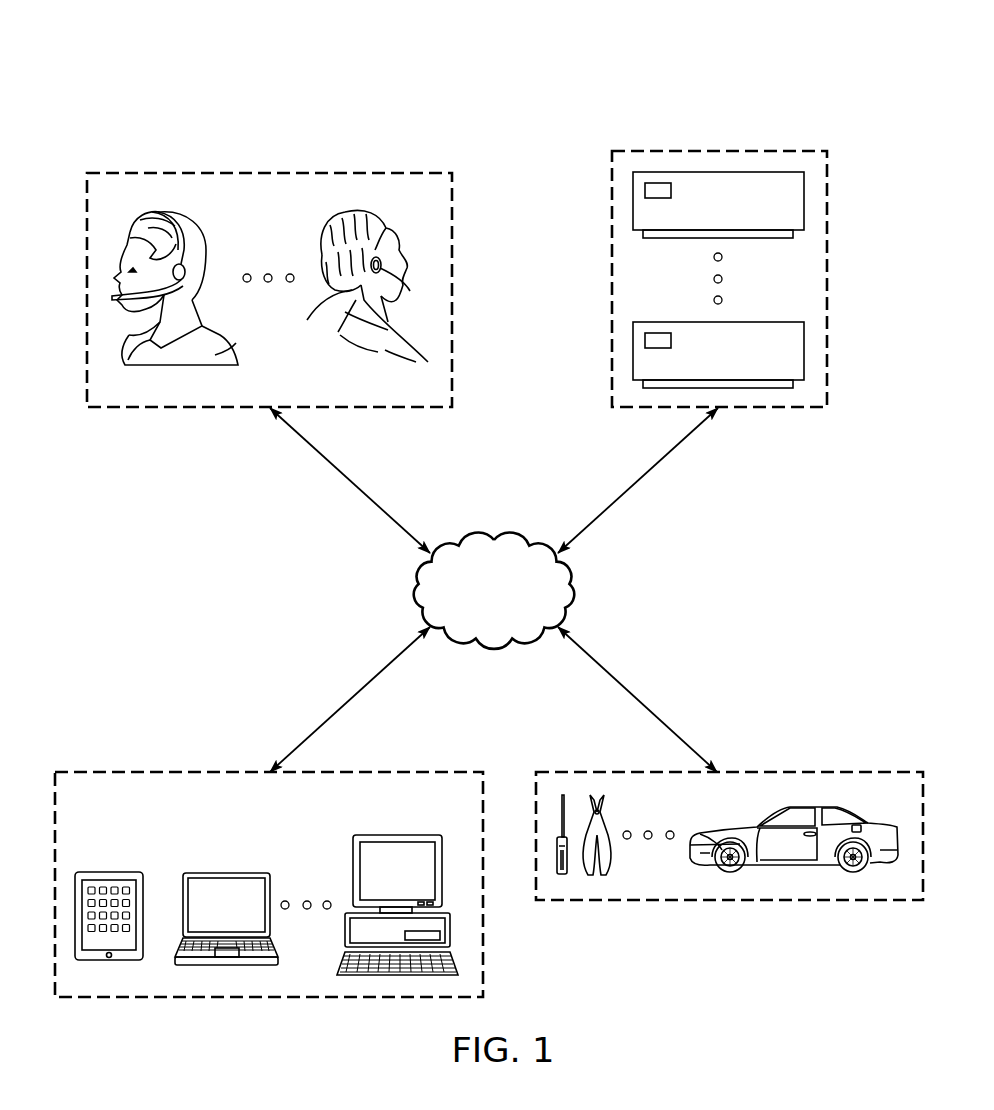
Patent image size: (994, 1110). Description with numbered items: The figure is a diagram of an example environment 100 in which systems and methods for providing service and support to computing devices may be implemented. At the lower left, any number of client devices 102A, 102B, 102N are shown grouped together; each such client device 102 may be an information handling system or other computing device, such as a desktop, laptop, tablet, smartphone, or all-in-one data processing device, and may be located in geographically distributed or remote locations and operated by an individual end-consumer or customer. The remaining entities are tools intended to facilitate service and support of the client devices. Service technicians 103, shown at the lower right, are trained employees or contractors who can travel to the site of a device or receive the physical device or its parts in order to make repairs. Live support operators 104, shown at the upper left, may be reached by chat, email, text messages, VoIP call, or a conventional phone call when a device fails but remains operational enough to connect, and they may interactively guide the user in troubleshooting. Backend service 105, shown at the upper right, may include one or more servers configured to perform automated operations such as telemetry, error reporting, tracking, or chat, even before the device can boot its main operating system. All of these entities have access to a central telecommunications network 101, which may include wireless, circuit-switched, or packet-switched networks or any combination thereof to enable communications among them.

The environment 100 is at (357, 68).
The network 101 is at (493, 537).
The client device 102 is at (267, 1001).
The client device 102A is at (108, 872).
The client device 102B is at (225, 873).
The client device 102N is at (397, 835).
The service technicians 103 is at (743, 905).
The live support operators 104 is at (268, 171).
The backend service 105 is at (719, 149).